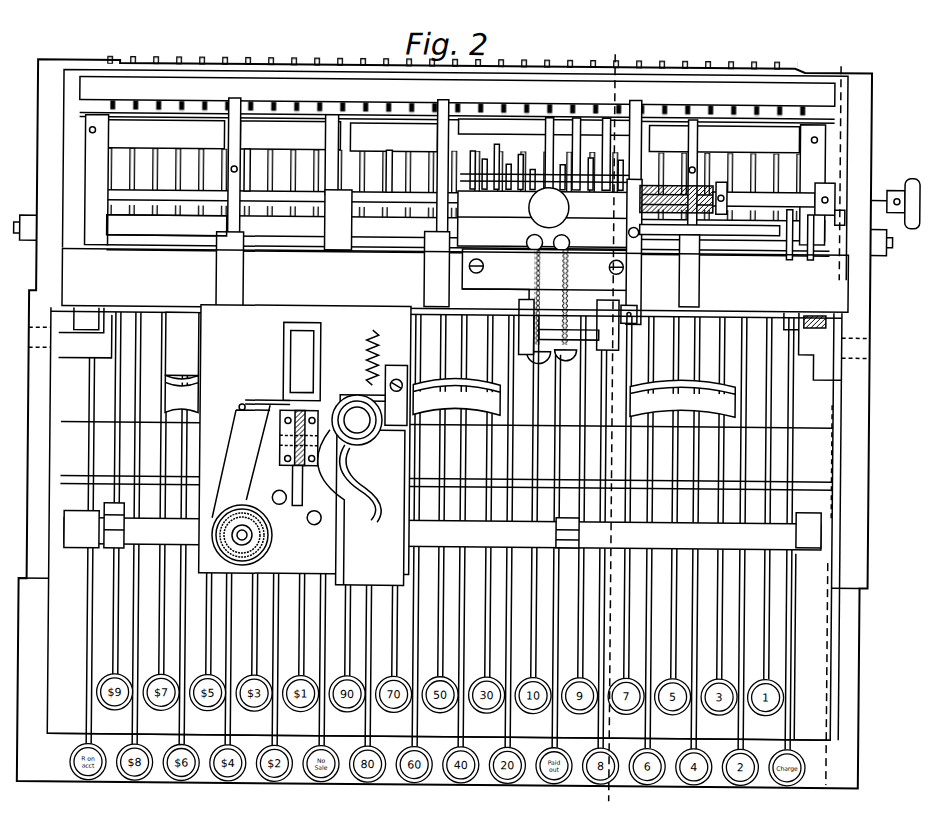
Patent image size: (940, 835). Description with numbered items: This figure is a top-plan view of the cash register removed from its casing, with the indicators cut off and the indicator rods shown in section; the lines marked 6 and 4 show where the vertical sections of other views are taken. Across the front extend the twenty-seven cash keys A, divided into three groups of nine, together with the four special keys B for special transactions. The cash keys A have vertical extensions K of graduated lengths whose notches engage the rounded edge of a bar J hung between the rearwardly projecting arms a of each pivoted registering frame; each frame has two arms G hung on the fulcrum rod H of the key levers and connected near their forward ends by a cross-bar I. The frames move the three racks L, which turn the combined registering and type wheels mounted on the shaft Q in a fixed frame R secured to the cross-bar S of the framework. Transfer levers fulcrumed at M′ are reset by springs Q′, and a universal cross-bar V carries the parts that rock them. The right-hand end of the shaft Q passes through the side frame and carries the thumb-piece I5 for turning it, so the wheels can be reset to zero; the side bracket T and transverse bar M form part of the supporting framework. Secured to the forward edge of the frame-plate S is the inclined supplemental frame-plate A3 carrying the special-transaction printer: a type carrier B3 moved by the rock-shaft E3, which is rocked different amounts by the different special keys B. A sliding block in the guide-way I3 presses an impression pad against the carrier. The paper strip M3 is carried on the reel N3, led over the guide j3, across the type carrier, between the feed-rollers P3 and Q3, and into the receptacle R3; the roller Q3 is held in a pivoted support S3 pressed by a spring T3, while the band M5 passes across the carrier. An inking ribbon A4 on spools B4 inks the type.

The side bracket T is at (86, 181).
The transverse bar M is at (453, 137).
The rack L is at (576, 135).
The rearwardly projecting arm a is at (124, 248).
The universal cross-bar V is at (183, 240).
The bar J is at (310, 205).
The fixed frame R is at (551, 285).
The spring Q′ is at (534, 277).
The shaft Q is at (760, 195).
The fulcrum M′ is at (834, 184).
The vertical extension K is at (844, 215).
The handle I5 is at (910, 177).
The cross-bar S is at (450, 283).
The fulcrum rod H is at (812, 417).
The cash key A is at (771, 619).
The cross-bar I is at (423, 364).
The arm G is at (510, 400).
The rock-shaft E3 is at (690, 544).
The supplemental frame-plate A3 is at (305, 440).
The receptacle R3 is at (395, 553).
The guide-way I3 is at (302, 361).
The spring T3 is at (366, 350).
The pivoted support S3 is at (396, 367).
The feed-roller P3 is at (356, 397).
The feed-roller Q3 is at (383, 415).
The band M5 is at (365, 483).
The guide j3 is at (240, 406).
The paper strip M3 is at (228, 477).
The type carrier B3 is at (280, 444).
The inking ribbon A4 is at (274, 498).
The spool B4 is at (308, 520).
The reel N3 is at (258, 542).
The special key B is at (792, 719).
The section line 6— 6 is at (608, 816).
The section line 4— 4 is at (834, 818).